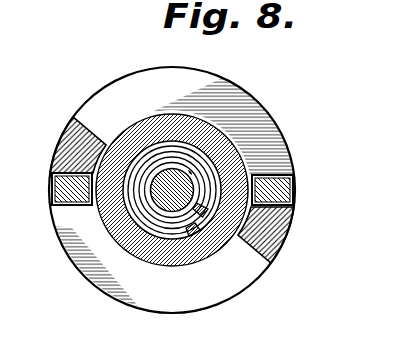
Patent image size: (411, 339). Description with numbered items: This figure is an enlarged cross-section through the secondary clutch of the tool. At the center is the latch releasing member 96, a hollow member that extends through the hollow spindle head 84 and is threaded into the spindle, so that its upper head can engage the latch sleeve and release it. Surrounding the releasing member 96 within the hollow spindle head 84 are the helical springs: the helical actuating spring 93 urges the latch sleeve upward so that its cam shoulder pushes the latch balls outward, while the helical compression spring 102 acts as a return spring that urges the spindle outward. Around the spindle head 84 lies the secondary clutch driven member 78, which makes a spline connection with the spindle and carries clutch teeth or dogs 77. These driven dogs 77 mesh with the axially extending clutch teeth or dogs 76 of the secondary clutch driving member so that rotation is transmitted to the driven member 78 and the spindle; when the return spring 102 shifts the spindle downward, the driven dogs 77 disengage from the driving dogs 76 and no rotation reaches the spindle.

The axially extending clutch teeth or dogs 76 is at (63, 191).
The clutch teeth or dogs 77 is at (73, 135).
The secondary clutch driven member 78 is at (231, 107).
The hollow spindle head 84 is at (235, 150).
The helical actuating spring 93 is at (193, 226).
The latch releasing member 96 is at (152, 199).
The helical compression spring 102 is at (221, 182).